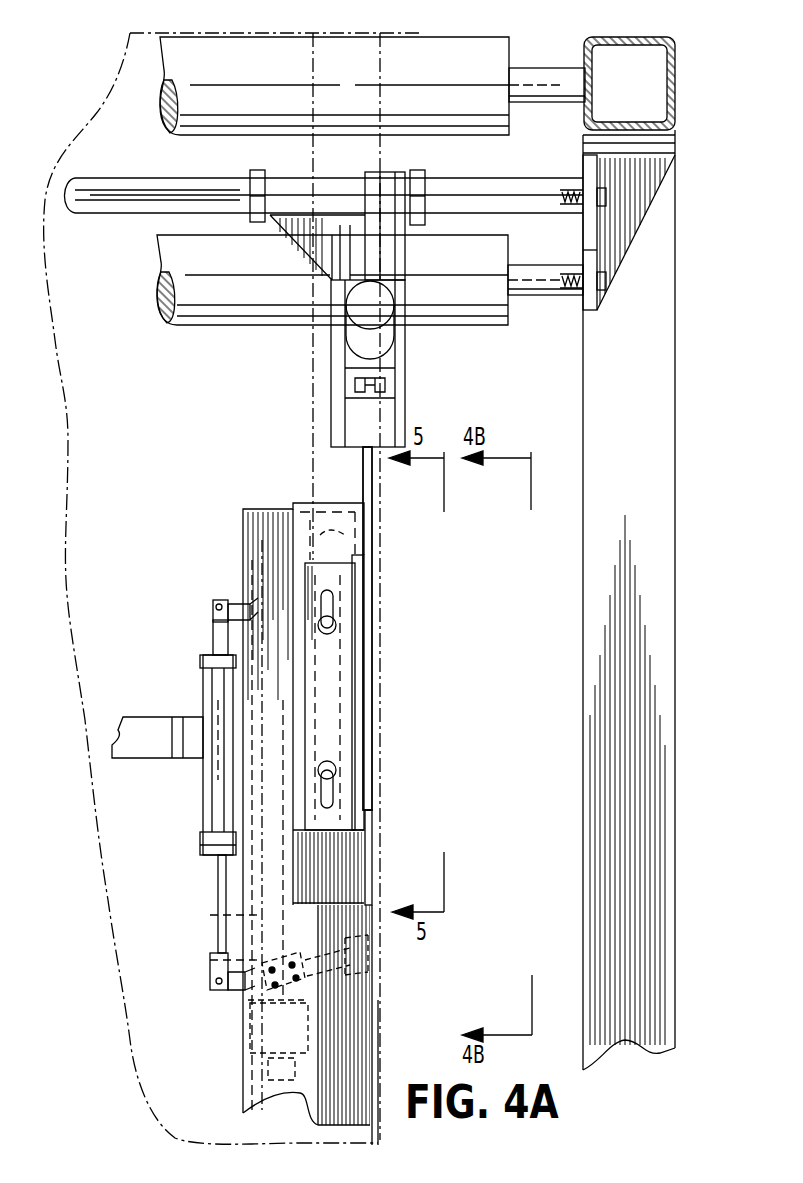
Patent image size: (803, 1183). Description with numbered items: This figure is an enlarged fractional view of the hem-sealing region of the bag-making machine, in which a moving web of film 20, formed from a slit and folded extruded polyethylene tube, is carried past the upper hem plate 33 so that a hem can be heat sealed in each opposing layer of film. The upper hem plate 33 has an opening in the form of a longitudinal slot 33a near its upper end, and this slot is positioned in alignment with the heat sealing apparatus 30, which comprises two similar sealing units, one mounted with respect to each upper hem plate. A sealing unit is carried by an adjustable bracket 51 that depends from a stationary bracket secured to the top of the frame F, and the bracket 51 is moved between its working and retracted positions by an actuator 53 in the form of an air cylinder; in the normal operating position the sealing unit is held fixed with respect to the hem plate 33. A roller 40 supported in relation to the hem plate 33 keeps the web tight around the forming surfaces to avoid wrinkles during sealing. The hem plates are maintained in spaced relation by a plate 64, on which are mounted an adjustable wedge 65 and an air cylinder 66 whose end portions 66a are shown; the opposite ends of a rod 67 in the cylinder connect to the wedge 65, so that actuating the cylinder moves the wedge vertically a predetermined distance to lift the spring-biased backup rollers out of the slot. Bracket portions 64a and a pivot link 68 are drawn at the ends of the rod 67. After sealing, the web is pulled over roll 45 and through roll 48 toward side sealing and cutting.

The moving web of film 20 is at (75, 643).
The roll 48 is at (450, 62).
The roll 45 is at (482, 325).
The actuator 53 is at (352, 312).
The frame F is at (653, 333).
The adjustable bracket 51 is at (376, 482).
The upper hem plate 33 is at (278, 515).
The longitudinal slot 33a is at (330, 534).
The heat sealing apparatus 30 is at (411, 711).
The air cylinder 66 is at (210, 800).
The cylinder end cap 66a is at (205, 666).
The rod 67 is at (218, 880).
The adjustable wedge 65 is at (210, 917).
The plate 64 is at (250, 1022).
The bracket 64a is at (258, 603).
The pivot link 68 is at (236, 606).
The roller 40 is at (362, 944).